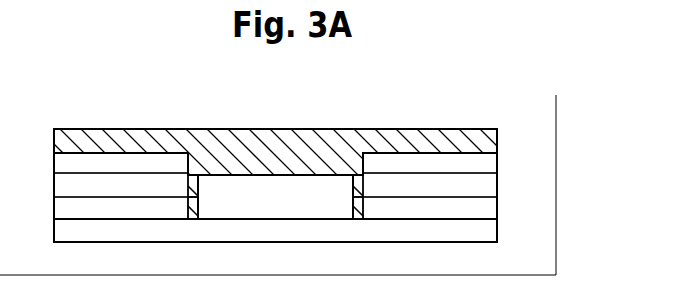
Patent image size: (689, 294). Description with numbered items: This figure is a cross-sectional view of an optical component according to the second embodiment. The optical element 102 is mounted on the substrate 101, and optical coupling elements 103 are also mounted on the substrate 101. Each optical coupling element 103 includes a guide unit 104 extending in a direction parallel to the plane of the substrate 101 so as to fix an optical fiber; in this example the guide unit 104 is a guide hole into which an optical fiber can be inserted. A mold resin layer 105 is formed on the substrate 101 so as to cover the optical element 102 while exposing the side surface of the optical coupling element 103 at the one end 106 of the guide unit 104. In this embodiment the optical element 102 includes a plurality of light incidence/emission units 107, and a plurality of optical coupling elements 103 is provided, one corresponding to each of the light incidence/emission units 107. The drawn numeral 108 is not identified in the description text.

The substrate 101 is at (497, 230).
The optical element 102 is at (297, 183).
The optical coupling element 103 is at (88, 157).
The guide unit 104 is at (147, 183).
The mold resin layer 105 is at (497, 131).
The one end of the guide unit 106 is at (54, 188).
The light incidence/emission unit 107 is at (192, 204).
The lower via conductor 108 is at (195, 219).